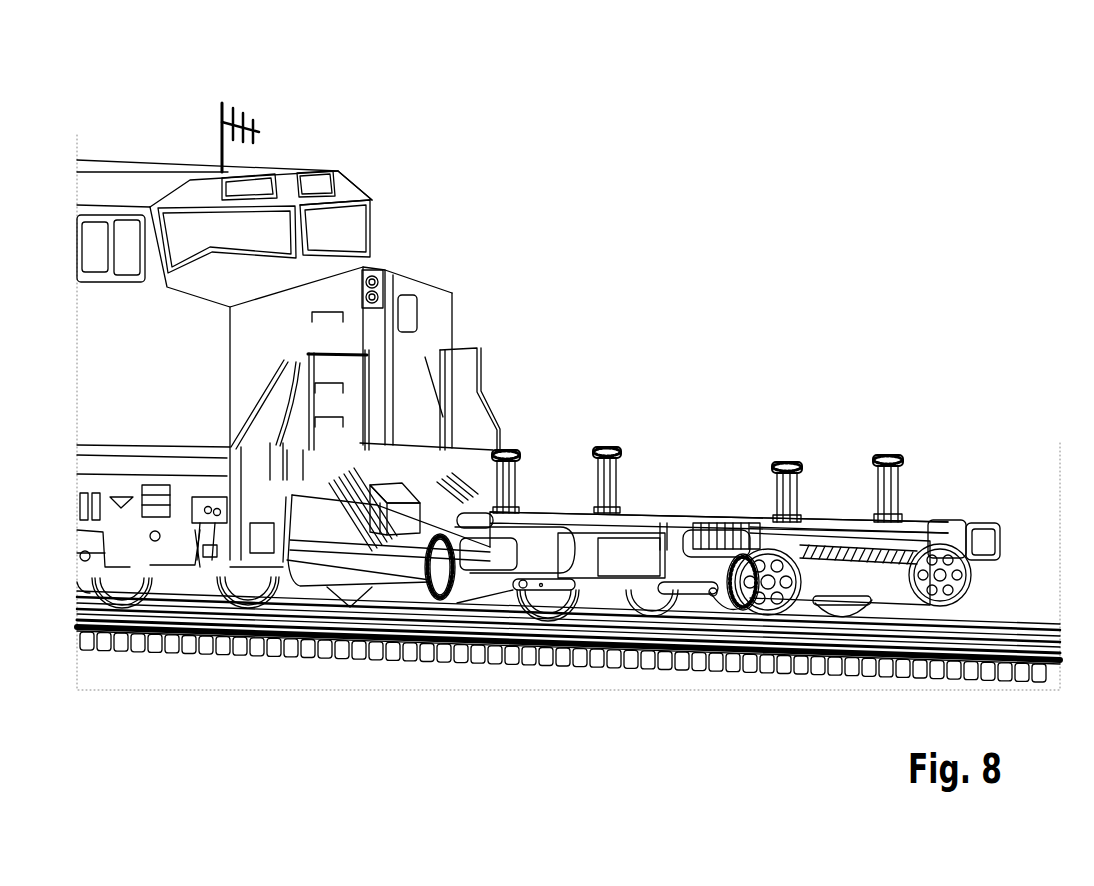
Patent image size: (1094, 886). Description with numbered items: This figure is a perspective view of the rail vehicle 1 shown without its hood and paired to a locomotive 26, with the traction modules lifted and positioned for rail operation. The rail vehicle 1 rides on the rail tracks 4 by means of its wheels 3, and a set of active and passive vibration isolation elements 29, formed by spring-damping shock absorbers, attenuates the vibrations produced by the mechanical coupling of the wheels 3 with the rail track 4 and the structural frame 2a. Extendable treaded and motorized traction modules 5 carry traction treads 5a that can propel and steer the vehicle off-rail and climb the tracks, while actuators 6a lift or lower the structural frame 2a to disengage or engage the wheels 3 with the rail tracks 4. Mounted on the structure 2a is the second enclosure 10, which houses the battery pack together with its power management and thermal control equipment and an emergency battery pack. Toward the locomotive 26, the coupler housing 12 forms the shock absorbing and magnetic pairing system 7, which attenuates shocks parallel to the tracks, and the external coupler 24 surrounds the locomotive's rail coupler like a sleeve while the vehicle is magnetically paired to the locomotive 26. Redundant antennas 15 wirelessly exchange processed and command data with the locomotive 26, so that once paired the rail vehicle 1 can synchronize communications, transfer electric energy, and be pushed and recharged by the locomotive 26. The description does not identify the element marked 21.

The rail vehicle 1 is at (688, 238).
The structural frame 2a is at (650, 515).
The wheels 3 is at (545, 605).
The rail tracks 4 is at (1030, 632).
The extendable treaded and motorized traction modules 5 is at (853, 578).
The traction treads 5a is at (730, 613).
The actuators 6a is at (605, 443).
The shock absorbing system and magnetic pairing system 7 is at (378, 497).
The second enclosure 10 is at (620, 557).
The coupler housing 12 is at (898, 535).
The antennas 15 is at (222, 135).
The coupling device 21 is at (393, 480).
The external coupler 24 is at (415, 520).
The locomotive 26 is at (343, 187).
The vibration isolation elements 29 is at (515, 560).